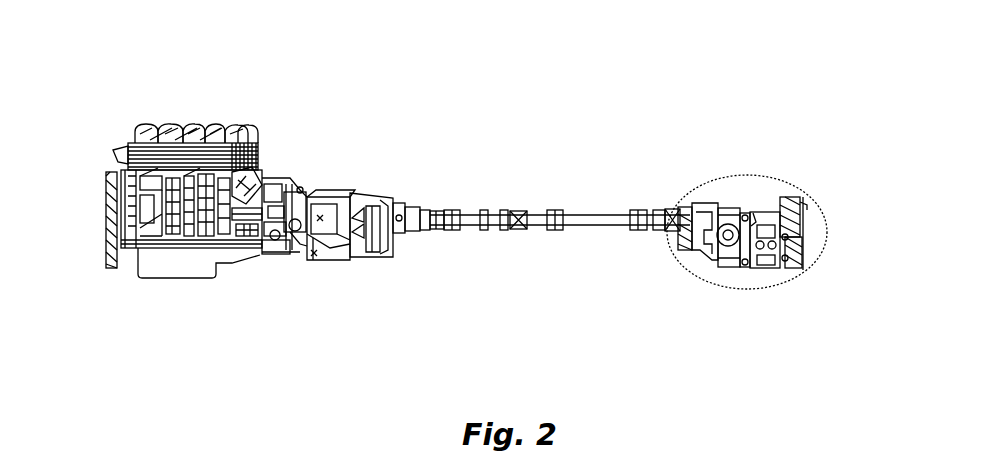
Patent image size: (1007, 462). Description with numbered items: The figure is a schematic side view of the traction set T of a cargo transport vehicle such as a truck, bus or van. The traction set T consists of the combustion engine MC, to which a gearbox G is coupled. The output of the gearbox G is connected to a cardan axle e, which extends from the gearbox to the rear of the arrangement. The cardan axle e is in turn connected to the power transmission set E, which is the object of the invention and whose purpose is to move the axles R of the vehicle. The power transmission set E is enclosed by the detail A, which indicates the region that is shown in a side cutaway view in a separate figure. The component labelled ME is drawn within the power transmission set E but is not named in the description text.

The combustion engine MC is at (160, 126).
The traction set T is at (296, 144).
The gearbox G is at (363, 256).
The cardan axle e is at (556, 211).
The power transmission set E is at (654, 268).
The axles R is at (728, 207).
The detail A is at (780, 180).
The electric machine ME is at (802, 208).